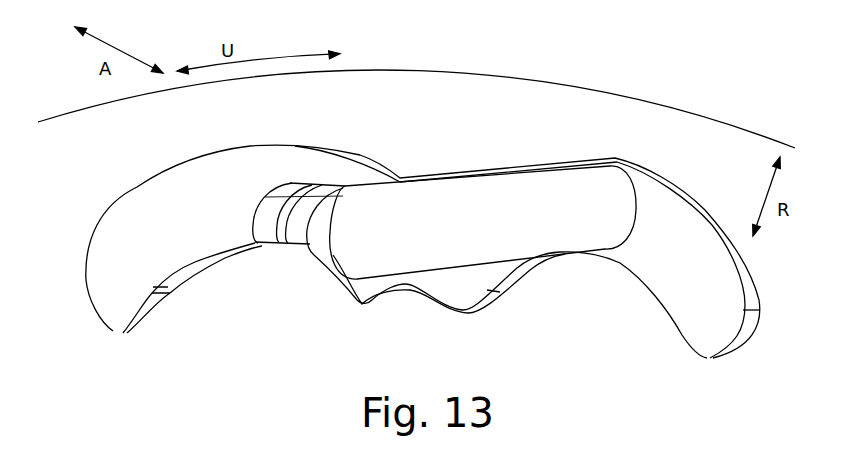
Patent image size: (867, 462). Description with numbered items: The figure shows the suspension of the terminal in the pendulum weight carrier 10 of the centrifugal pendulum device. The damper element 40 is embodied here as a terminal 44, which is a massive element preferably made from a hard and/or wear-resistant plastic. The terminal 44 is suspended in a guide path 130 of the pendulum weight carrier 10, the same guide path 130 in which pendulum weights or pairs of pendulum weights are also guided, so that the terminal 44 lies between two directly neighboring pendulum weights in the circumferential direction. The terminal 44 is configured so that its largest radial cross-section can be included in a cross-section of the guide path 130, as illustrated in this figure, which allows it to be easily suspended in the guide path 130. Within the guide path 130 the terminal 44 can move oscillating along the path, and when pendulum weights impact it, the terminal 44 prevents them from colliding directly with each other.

The pendulum weight carrier 10 is at (423, 250).
The damper element 40 is at (483, 201).
The terminal 44 is at (467, 208).
The guide path 130 is at (713, 217).